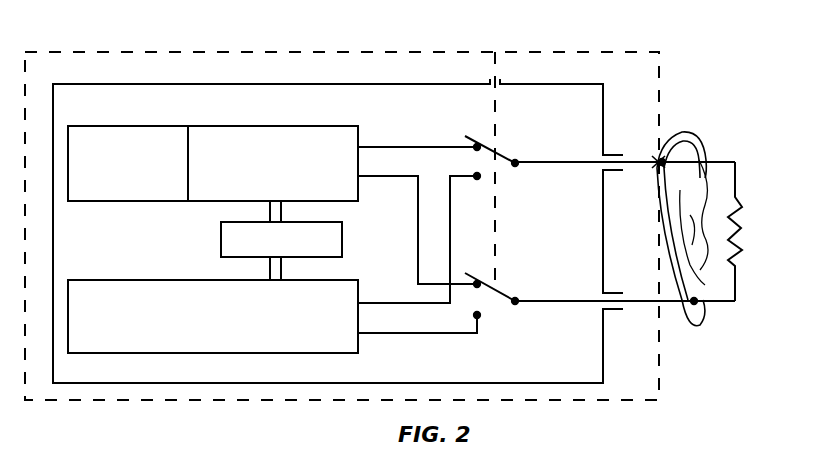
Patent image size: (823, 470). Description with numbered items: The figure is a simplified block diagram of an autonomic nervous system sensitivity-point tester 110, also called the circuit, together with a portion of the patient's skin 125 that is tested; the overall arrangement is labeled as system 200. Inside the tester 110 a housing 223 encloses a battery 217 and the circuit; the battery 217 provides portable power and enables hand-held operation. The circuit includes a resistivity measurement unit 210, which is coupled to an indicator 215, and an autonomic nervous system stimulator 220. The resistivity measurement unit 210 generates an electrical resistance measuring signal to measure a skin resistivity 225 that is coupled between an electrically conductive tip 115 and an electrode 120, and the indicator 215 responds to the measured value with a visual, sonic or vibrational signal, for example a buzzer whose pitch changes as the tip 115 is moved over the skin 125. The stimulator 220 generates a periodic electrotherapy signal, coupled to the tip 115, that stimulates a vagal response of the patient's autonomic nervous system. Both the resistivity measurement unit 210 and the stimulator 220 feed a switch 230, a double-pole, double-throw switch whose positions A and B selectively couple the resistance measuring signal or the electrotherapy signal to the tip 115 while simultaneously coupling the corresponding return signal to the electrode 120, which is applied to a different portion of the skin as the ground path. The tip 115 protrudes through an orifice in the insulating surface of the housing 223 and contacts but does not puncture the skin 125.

The autonomic nervous system sensitivity-point tester 110 is at (320, 52).
The system 200 is at (748, 68).
The indicator 215 is at (147, 126).
The resistivity measurement unit 210 is at (258, 126).
The battery 217 is at (221, 232).
The autonomic nervous system stimulator 220 is at (152, 280).
The switch 230 is at (497, 232).
The housing 223 is at (600, 370).
The electrically conductive tip 115 is at (656, 158).
The electrode 120 is at (700, 307).
The portion of the patient's skin 125 is at (703, 150).
The skin resistivity 225 is at (743, 220).